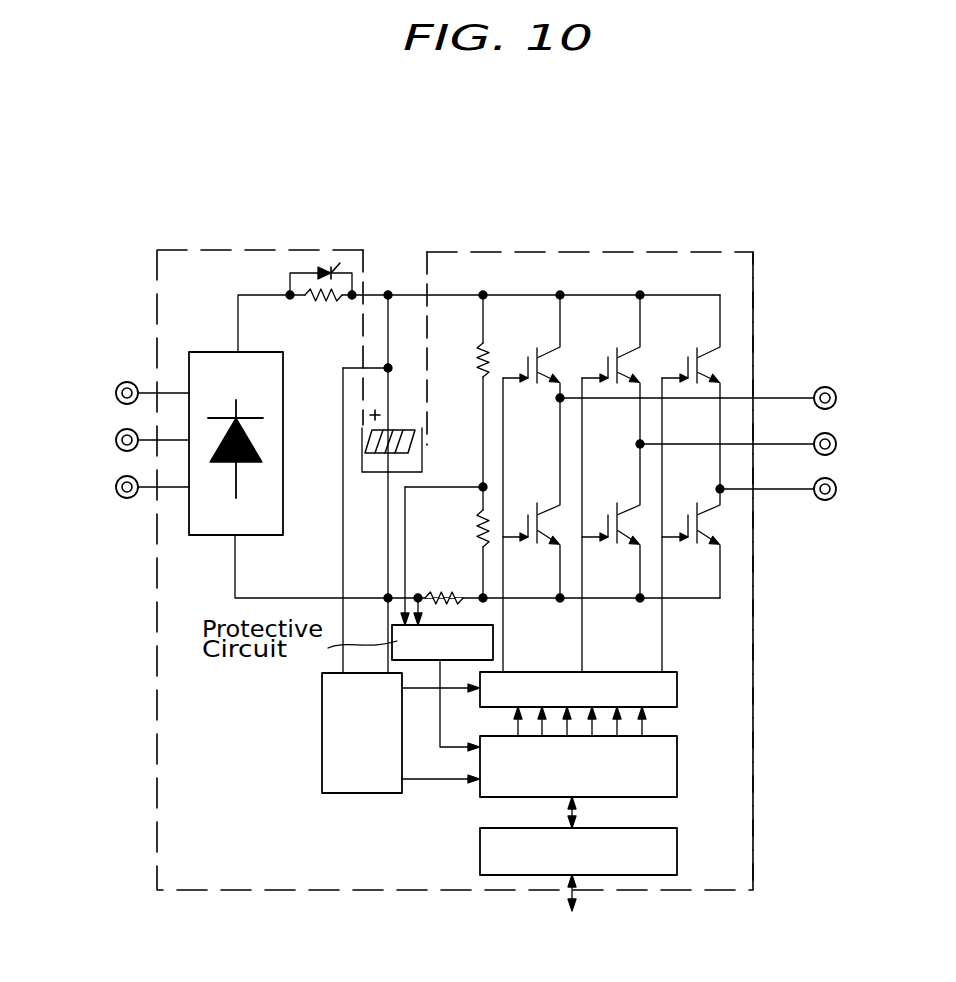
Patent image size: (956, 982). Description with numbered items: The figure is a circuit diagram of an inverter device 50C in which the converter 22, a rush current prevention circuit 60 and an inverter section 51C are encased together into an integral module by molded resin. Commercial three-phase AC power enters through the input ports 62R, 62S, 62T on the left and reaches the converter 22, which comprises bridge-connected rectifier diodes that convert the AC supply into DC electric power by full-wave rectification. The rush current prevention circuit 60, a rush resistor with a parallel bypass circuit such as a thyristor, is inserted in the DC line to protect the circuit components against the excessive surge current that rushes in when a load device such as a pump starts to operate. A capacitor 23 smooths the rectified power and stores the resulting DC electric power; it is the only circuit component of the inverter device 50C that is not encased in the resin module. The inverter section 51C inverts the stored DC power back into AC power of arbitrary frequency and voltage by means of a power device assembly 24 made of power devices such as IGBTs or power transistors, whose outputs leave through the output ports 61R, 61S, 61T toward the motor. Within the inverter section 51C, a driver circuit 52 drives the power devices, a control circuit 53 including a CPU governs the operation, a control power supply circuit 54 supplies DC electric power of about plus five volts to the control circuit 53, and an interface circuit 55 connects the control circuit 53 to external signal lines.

The converter section 22 is at (196, 347).
The capacitor 23 is at (400, 418).
The power device assembly 24 is at (741, 329).
The inverter device 50C is at (508, 228).
The inverter section 51C is at (647, 250).
The driver circuit 52 is at (677, 690).
The control circuit 53 is at (677, 775).
The control power supply circuit 54 is at (322, 737).
The interface circuit 55 is at (677, 855).
The rush current prevention circuit 60 is at (308, 268).
The port 61T is at (838, 398).
The port 61S is at (838, 444).
The port 61R is at (838, 489).
The port 62T is at (116, 393).
The port 62S is at (116, 440).
The port 62R is at (116, 487).